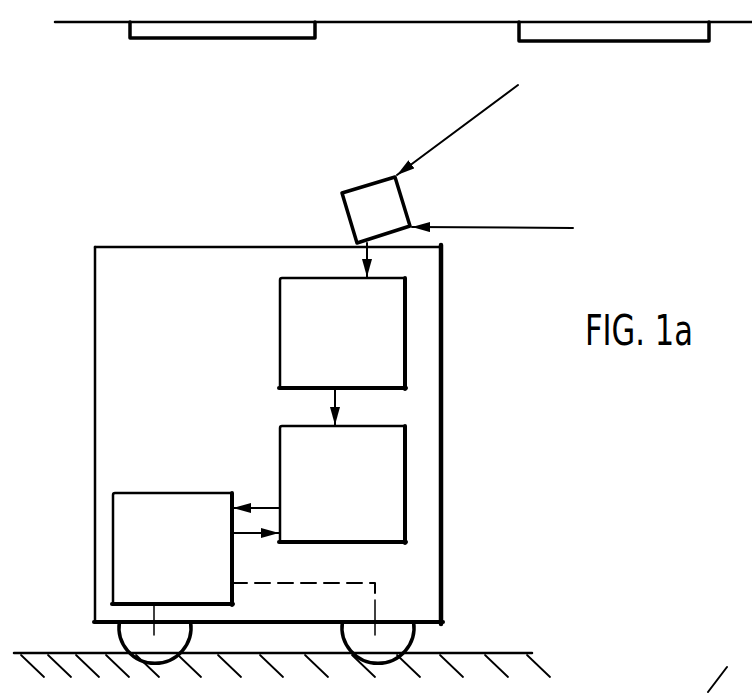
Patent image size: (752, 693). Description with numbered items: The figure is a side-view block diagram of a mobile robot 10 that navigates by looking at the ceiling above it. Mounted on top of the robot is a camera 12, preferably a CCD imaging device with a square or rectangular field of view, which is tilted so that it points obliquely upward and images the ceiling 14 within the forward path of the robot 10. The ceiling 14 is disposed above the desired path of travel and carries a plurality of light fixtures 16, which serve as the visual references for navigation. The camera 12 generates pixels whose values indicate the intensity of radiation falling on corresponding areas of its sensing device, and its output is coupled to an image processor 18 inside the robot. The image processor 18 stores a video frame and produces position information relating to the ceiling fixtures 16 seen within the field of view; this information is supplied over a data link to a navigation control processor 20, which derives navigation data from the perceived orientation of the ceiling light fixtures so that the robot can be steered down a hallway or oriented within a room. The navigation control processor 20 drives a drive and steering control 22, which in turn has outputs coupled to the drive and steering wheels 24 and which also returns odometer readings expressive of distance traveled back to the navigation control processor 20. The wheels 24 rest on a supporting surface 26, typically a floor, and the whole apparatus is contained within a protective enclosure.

The mobile robot 10 is at (460, 407).
The camera 12 is at (362, 187).
The ceiling 14 is at (398, 23).
The light fixtures 16 is at (196, 39).
The image processor 18 is at (280, 318).
The navigation control processor 20 is at (280, 442).
The drive and steering control 22 is at (140, 490).
The drive and steering wheels 24 is at (120, 636).
The supporting surface 26 is at (55, 651).